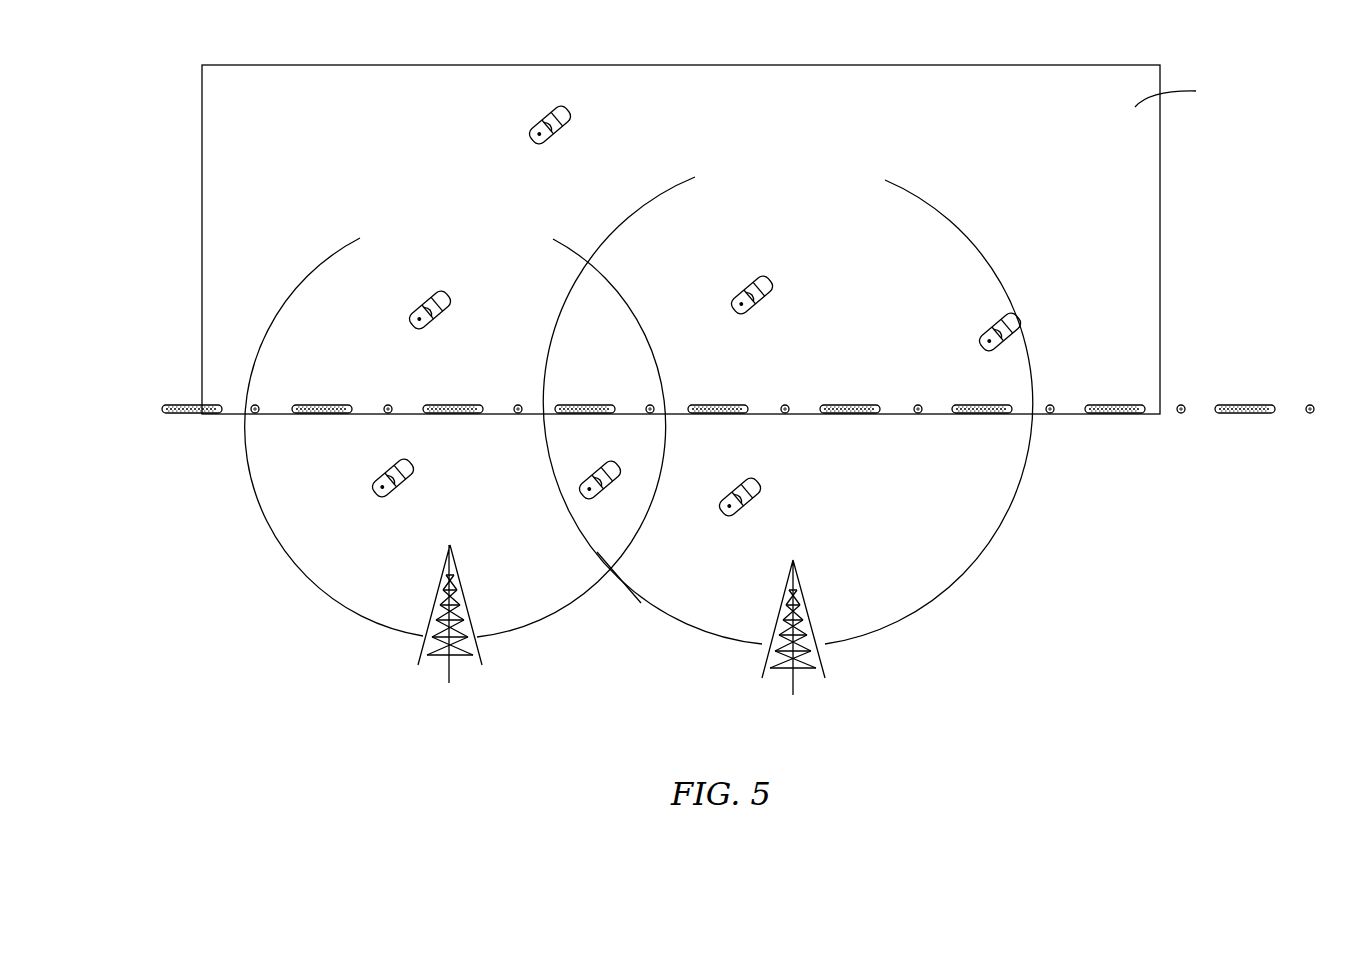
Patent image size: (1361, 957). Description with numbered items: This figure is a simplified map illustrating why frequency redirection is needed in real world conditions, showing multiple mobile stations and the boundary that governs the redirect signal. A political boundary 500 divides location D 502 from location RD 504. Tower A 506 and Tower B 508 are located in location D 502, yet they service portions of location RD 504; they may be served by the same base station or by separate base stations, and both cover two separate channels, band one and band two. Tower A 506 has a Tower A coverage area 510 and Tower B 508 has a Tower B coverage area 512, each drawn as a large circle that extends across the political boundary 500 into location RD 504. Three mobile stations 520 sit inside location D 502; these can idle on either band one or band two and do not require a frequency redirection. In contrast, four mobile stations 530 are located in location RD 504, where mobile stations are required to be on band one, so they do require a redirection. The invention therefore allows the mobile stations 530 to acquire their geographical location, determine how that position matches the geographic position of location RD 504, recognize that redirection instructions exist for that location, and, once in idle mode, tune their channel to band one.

The political boundary 500 is at (1312, 412).
The location D 502 is at (1020, 623).
The location RD 504 is at (1143, 219).
The Tower A 506 is at (485, 660).
The Tower B 508 is at (828, 672).
The Tower A coverage area 510 is at (300, 280).
The Tower B coverage area 512 is at (950, 216).
The mobile stations 520 is at (385, 468).
The mobile stations 530 is at (572, 112).